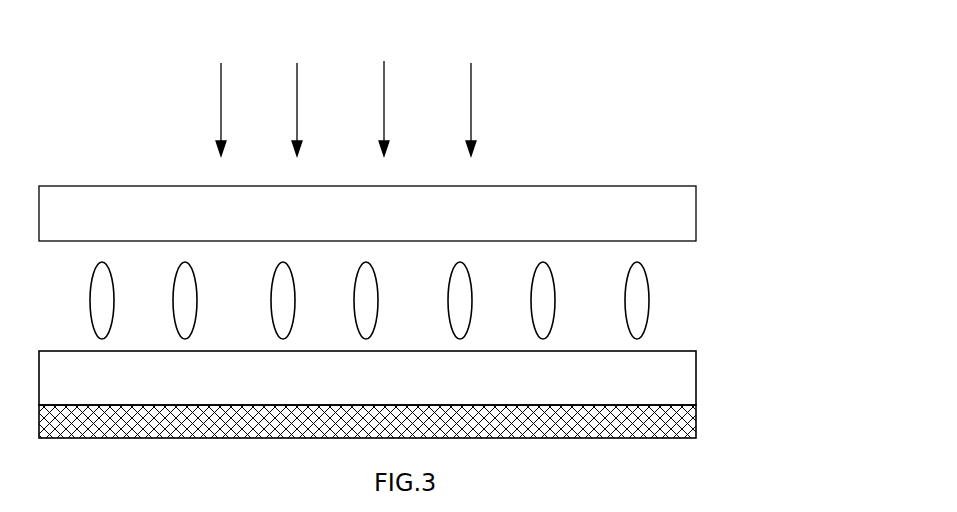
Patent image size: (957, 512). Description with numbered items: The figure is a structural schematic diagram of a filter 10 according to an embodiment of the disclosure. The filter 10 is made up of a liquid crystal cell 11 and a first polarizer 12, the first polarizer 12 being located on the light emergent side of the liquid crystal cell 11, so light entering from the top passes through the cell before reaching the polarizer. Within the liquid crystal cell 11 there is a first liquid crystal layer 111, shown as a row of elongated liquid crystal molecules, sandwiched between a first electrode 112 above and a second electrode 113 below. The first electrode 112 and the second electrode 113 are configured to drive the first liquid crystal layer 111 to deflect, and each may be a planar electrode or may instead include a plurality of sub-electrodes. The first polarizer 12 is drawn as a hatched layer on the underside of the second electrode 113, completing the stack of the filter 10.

The filter 10 is at (36, 80).
The liquid crystal cell 11 is at (838, 213).
The first liquid crystal layer 111 is at (638, 303).
The first electrode 112 is at (670, 212).
The second electrode 113 is at (665, 389).
The first polarizer 12 is at (665, 427).